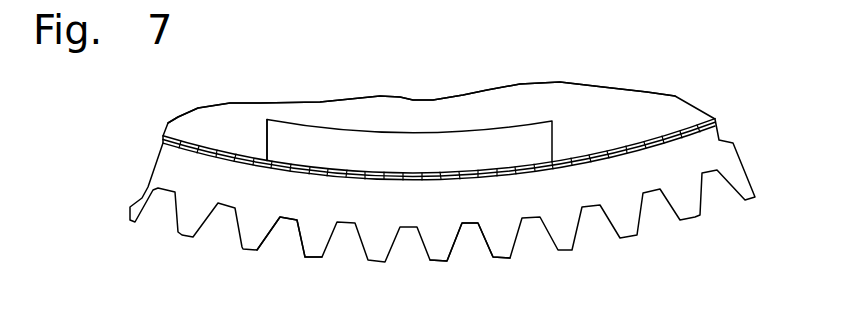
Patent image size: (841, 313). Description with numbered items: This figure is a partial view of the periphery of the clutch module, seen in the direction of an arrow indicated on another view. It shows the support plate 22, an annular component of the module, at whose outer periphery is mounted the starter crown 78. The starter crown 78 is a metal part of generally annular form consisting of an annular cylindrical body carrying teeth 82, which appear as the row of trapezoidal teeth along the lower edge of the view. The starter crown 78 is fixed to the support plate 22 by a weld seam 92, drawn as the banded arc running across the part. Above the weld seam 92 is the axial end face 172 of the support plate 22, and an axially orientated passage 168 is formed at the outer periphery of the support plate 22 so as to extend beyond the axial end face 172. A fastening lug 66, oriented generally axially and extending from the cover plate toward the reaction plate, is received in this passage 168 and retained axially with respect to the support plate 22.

The support plate 22 is at (647, 90).
The fastening lug 66 is at (443, 142).
The starter crown 78 is at (302, 258).
The teeth 82 is at (493, 247).
The weld seam 92 is at (570, 160).
The axially orientated passage 168 is at (506, 132).
The axial end face 172 is at (607, 110).